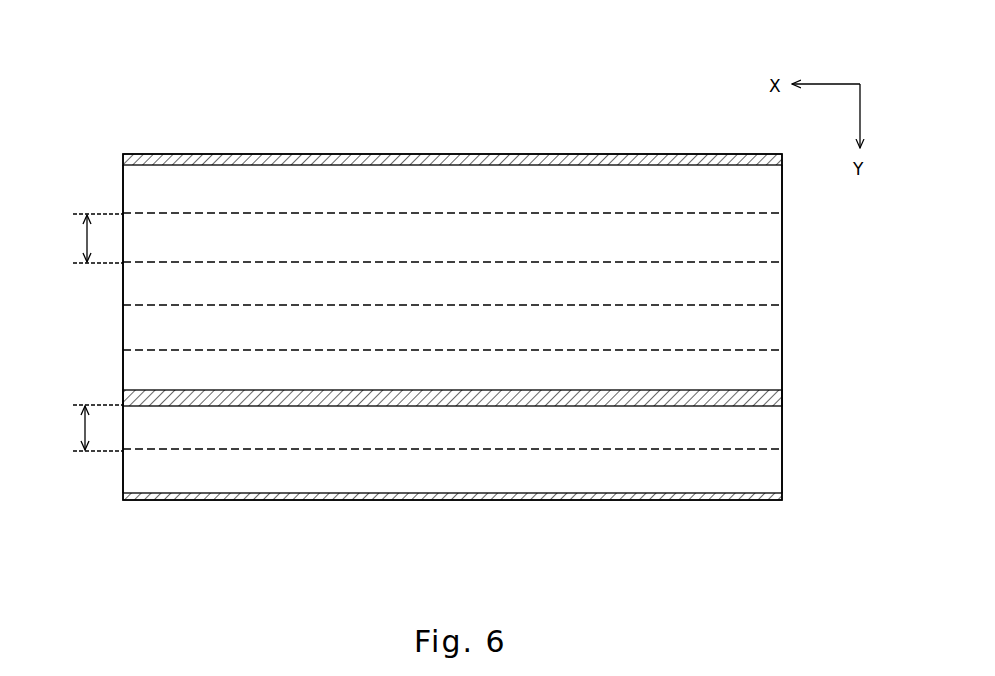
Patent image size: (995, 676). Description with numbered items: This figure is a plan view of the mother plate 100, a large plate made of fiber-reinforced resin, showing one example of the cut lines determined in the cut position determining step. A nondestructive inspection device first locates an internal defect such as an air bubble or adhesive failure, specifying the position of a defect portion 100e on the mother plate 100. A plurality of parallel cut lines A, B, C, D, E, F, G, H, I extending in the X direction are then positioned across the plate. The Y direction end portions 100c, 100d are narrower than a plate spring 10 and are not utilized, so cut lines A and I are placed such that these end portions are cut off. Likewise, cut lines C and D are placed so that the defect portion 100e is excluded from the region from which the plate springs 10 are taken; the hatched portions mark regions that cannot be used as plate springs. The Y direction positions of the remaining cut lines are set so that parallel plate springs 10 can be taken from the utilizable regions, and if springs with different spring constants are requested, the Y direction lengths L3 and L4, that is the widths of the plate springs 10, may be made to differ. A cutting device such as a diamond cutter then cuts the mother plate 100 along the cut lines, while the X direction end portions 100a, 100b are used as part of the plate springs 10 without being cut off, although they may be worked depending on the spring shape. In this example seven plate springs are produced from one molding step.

The mother plate 100 is at (285, 148).
The X direction end portion 100a is at (782, 320).
The X direction end portion 100b is at (123, 292).
The Y direction end portion 100c is at (467, 153).
The Y direction end portion 100d is at (462, 501).
The defect portion 100e is at (265, 399).
The plate spring 10 is at (212, 473).
The cut line A is at (763, 493).
The cut line B is at (763, 449).
The cut line C is at (763, 406).
The cut line D is at (763, 390).
The cut line E is at (763, 350).
The cut line F is at (763, 305).
The cut line G is at (763, 262).
The cut line H is at (763, 213).
The cut line I is at (768, 170).
The length L3 is at (83, 428).
The length L4 is at (83, 238).